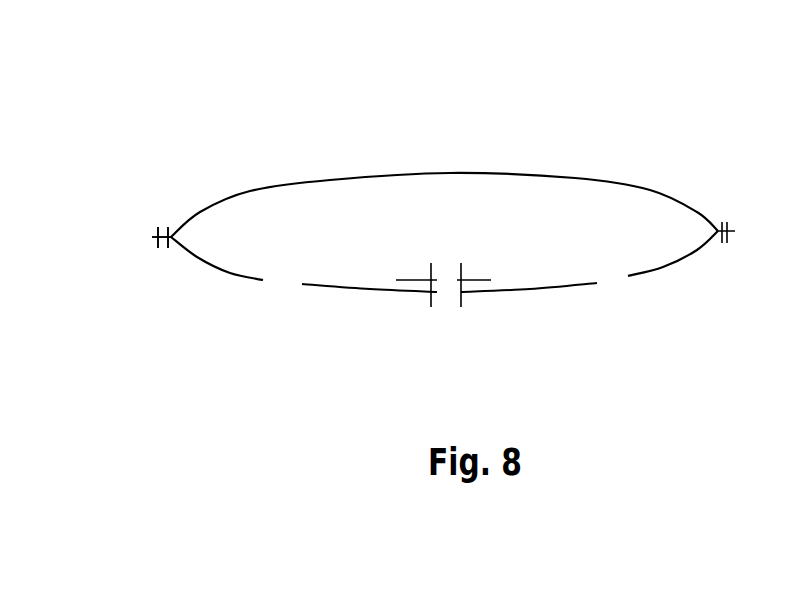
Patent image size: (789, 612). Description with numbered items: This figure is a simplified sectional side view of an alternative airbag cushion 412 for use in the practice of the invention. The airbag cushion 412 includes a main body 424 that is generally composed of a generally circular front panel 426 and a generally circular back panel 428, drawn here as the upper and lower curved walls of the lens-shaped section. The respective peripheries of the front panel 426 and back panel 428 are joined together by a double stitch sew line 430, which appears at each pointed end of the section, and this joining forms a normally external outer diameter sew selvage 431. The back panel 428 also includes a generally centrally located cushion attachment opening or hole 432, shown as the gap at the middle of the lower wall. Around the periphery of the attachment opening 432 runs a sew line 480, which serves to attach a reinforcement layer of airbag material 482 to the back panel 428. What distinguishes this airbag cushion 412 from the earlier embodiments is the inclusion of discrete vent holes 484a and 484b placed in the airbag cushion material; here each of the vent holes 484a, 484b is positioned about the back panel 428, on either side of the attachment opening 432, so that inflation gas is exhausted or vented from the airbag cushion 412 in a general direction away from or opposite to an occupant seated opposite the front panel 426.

The airbag cushion 412 is at (444, 211).
The main body 424 is at (572, 176).
The front panel 426 is at (284, 183).
The back panel 428 is at (666, 272).
The double stitch sew line 430 is at (163, 249).
The outer diameter sew selvage 431 is at (155, 230).
The cushion attachment opening 432 is at (449, 304).
The sew line 480 is at (427, 273).
The reinforcement layer of airbag material 482 is at (484, 274).
The vent hole 484a is at (302, 285).
The vent hole 484b is at (596, 287).